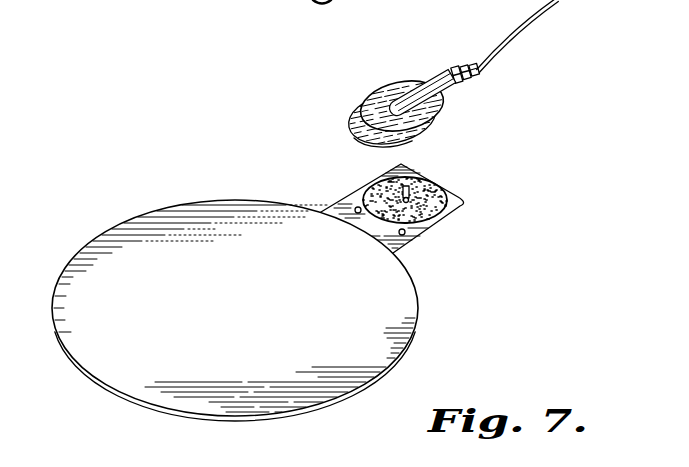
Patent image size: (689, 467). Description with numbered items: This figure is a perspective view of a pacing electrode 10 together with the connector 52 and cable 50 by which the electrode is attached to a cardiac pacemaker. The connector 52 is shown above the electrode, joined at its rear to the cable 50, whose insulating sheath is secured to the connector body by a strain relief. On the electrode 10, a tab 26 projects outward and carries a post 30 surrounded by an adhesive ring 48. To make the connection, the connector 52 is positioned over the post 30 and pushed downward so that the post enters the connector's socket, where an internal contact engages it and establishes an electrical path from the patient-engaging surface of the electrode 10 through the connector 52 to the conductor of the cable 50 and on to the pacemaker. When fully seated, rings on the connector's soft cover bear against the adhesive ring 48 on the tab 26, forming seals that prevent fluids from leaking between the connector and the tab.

The pacing electrode 10 is at (178, 230).
The tab 26 is at (460, 204).
The post 30 is at (413, 180).
The adhesive ring 48 is at (432, 198).
The cable 50 is at (505, 47).
The connector 52 is at (384, 95).